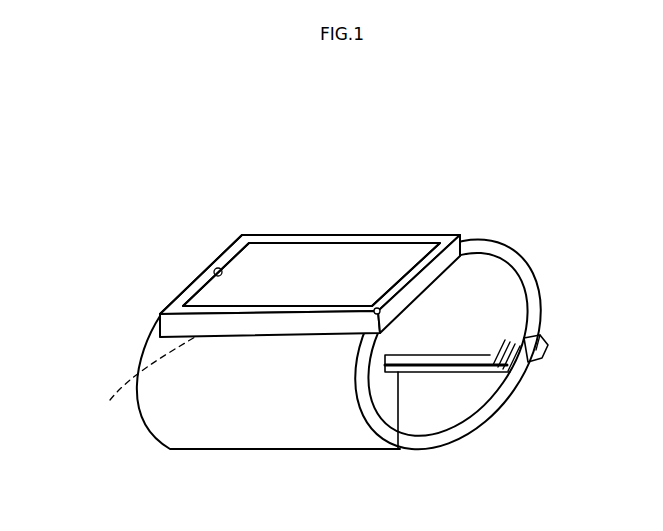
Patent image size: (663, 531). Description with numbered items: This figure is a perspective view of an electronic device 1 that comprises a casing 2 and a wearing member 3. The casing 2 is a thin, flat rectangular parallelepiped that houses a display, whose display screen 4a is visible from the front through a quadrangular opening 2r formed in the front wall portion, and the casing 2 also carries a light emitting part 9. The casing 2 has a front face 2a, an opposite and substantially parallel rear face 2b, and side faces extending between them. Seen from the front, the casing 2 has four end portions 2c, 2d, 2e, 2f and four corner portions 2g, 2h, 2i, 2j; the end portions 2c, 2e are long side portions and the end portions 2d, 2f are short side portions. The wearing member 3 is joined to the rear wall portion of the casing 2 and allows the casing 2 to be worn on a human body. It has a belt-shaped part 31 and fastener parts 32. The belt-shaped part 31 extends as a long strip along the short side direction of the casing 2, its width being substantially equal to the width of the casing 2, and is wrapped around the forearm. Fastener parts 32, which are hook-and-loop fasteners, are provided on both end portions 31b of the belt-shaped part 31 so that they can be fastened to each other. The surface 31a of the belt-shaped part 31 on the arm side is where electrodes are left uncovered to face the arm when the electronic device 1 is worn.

The electronic device 1 is at (461, 115).
The casing 2 is at (217, 243).
The face 2a is at (415, 241).
The face 2b is at (114, 380).
The end portion 2c is at (338, 236).
The end portion 2d is at (442, 263).
The end portion 2e is at (303, 327).
The end portion 2f is at (180, 292).
The corner portion 2g is at (464, 238).
The corner portion 2h is at (398, 450).
The corner portion 2i is at (160, 318).
The corner portion 2j is at (243, 233).
The opening 2r is at (214, 267).
The wearing member 3 is at (196, 459).
The display screen 4a is at (275, 255).
The light emitting part 9 is at (376, 316).
The belt-shaped part 31 is at (489, 424).
The surface 31a is at (442, 412).
The end portion 31b is at (538, 352).
The fastener part 32 is at (516, 343).